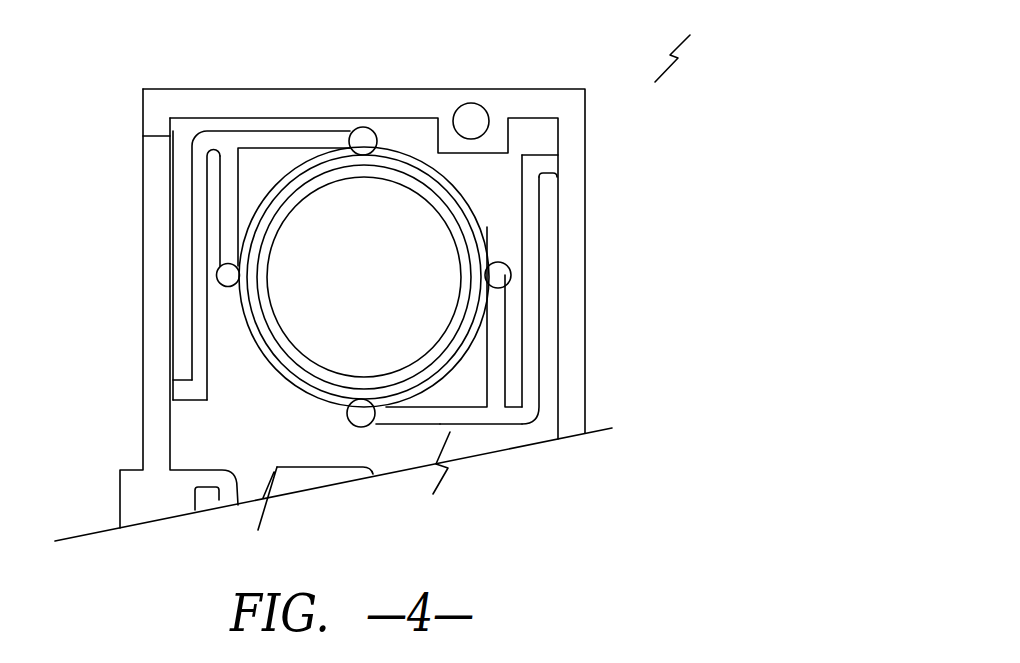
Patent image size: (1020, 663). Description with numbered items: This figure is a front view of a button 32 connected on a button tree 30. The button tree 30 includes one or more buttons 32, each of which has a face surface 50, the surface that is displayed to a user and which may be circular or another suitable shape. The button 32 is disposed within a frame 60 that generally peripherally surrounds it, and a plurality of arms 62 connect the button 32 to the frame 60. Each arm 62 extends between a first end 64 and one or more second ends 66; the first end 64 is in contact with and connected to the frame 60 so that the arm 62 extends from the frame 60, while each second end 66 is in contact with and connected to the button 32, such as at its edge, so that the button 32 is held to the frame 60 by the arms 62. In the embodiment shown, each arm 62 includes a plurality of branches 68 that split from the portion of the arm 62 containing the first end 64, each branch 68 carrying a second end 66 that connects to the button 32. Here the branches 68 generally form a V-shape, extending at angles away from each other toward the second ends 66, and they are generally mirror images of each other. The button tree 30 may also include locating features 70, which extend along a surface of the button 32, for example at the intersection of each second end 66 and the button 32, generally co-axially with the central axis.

The button tree 30 is at (696, 41).
The button 32 is at (493, 202).
The face surface 50 is at (346, 293).
The frame 60 is at (572, 322).
The arm 62 is at (188, 205).
The first end 64 is at (550, 152).
The second end 66 is at (340, 140).
The branch 68 is at (283, 145).
The locating feature 70 is at (357, 140).